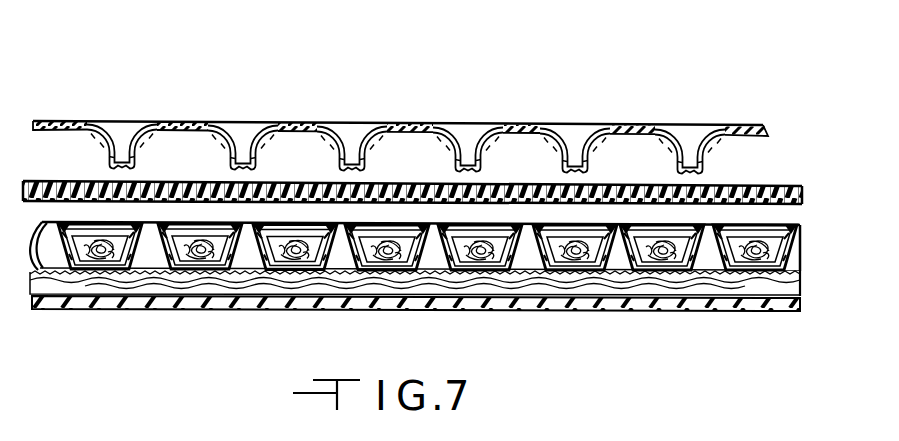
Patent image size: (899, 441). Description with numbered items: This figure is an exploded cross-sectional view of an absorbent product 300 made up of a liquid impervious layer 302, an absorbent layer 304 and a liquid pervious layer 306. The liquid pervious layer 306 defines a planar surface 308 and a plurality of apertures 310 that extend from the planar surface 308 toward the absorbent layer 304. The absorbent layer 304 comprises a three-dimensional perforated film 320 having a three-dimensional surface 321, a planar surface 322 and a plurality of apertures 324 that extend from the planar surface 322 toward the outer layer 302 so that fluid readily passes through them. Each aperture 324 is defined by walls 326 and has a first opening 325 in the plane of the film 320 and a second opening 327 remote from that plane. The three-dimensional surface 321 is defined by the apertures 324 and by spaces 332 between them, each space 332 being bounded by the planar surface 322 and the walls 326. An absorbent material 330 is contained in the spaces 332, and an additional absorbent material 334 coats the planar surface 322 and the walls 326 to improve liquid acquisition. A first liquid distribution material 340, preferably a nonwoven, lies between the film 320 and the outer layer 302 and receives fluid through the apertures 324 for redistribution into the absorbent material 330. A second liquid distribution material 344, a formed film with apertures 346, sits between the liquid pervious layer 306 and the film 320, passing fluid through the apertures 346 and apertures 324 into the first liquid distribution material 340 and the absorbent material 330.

The absorbent product 300 is at (64, 112).
The liquid impervious layer 302 is at (115, 316).
The absorbent layer 304 is at (32, 251).
The liquid pervious layer 306 is at (93, 114).
The planar surface 308 is at (291, 122).
The apertures 310 is at (128, 140).
The three-dimensional perforated film 320 is at (797, 243).
The three-dimensional surface 321 is at (410, 257).
The planar surface 322 is at (742, 231).
The apertures 324 is at (614, 243).
The first opening 325 is at (521, 224).
The walls 326 is at (605, 280).
The second opening 327 is at (658, 250).
The absorbent material 330 is at (743, 270).
The spaces 332 is at (650, 250).
The additional absorbent material 334 is at (197, 222).
The first liquid distribution material 340 is at (799, 289).
The second liquid distribution material 344 is at (783, 178).
The apertures 346 is at (738, 206).